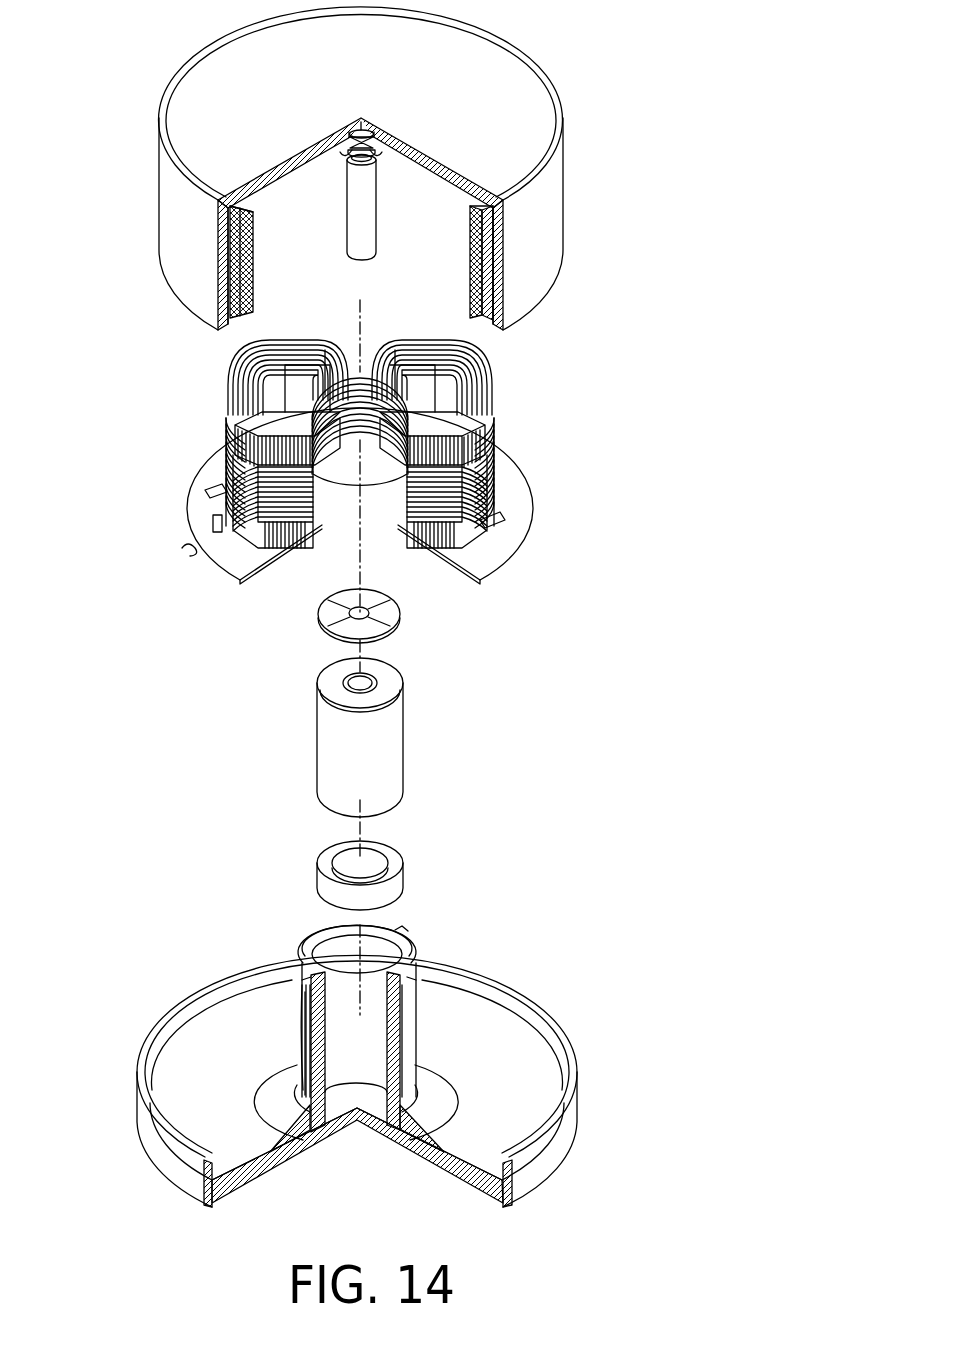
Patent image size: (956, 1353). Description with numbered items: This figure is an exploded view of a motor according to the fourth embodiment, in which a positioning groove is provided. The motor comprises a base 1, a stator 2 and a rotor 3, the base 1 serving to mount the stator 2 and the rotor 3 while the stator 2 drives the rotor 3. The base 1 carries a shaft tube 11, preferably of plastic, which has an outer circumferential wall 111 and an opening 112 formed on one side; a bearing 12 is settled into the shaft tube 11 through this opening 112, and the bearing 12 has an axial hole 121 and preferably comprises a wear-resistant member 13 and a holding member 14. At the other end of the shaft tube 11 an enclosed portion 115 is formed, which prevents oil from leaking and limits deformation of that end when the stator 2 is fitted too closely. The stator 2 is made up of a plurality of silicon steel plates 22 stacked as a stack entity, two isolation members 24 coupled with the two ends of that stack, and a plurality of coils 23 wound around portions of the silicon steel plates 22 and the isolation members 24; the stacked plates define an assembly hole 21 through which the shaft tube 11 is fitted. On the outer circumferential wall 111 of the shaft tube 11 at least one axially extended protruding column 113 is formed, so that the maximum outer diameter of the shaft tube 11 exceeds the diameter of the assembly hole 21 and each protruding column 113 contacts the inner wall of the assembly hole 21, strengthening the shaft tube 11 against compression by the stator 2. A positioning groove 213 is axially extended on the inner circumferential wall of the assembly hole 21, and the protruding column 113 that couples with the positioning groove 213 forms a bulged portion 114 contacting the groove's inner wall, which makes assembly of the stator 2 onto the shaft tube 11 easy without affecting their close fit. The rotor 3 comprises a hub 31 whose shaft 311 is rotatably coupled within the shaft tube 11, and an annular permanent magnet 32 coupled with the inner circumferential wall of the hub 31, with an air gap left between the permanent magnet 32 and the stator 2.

The base 1 is at (332, 1047).
The shaft tube 11 is at (327, 995).
The outer circumferential wall 111 is at (407, 990).
The opening 112 is at (331, 956).
The protruding column 113 is at (297, 992).
The bulged portion 114 is at (305, 1037).
The enclosed portion 115 is at (340, 1120).
The bearing 12 is at (310, 727).
The axial hole 121 is at (352, 686).
The wear-resistant member 13 is at (395, 858).
The holding member 14 is at (390, 612).
The stator 2 is at (385, 464).
The assembly hole 21 is at (322, 423).
The positioning groove 213 is at (333, 478).
The silicon steel plates 22 is at (472, 486).
The coils 23 is at (472, 425).
The isolation members 24 is at (470, 541).
The rotor 3 is at (406, 186).
The hub 31 is at (522, 98).
The shaft 311 is at (367, 215).
The permanent magnet 32 is at (488, 277).